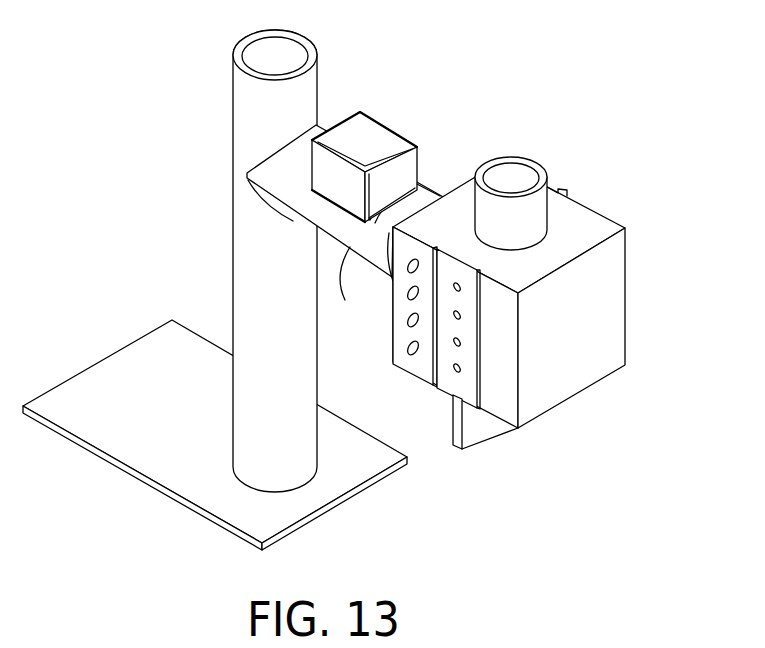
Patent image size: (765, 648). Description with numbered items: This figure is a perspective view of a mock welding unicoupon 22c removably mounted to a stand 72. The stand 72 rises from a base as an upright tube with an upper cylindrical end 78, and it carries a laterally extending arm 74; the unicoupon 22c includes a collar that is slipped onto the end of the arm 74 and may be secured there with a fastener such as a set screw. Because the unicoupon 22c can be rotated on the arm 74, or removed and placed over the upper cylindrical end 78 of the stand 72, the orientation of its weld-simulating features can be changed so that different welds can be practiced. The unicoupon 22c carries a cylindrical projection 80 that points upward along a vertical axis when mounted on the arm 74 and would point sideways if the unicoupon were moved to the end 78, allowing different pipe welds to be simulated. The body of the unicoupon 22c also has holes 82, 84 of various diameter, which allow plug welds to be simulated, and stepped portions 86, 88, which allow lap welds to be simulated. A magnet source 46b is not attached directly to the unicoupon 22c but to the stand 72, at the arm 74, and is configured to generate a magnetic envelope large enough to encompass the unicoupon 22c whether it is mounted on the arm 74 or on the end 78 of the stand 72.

The mock welding unicoupon 22c is at (676, 178).
The magnet source 46b is at (383, 124).
The stand 72 is at (233, 218).
The arm 74 is at (345, 262).
The upper cylindrical end 78 is at (312, 43).
The cylindrical projection 80 is at (528, 157).
The hole 82 is at (412, 354).
The hole 84 is at (458, 372).
The stepped portion 86 is at (433, 364).
The stepped portion 88 is at (478, 388).